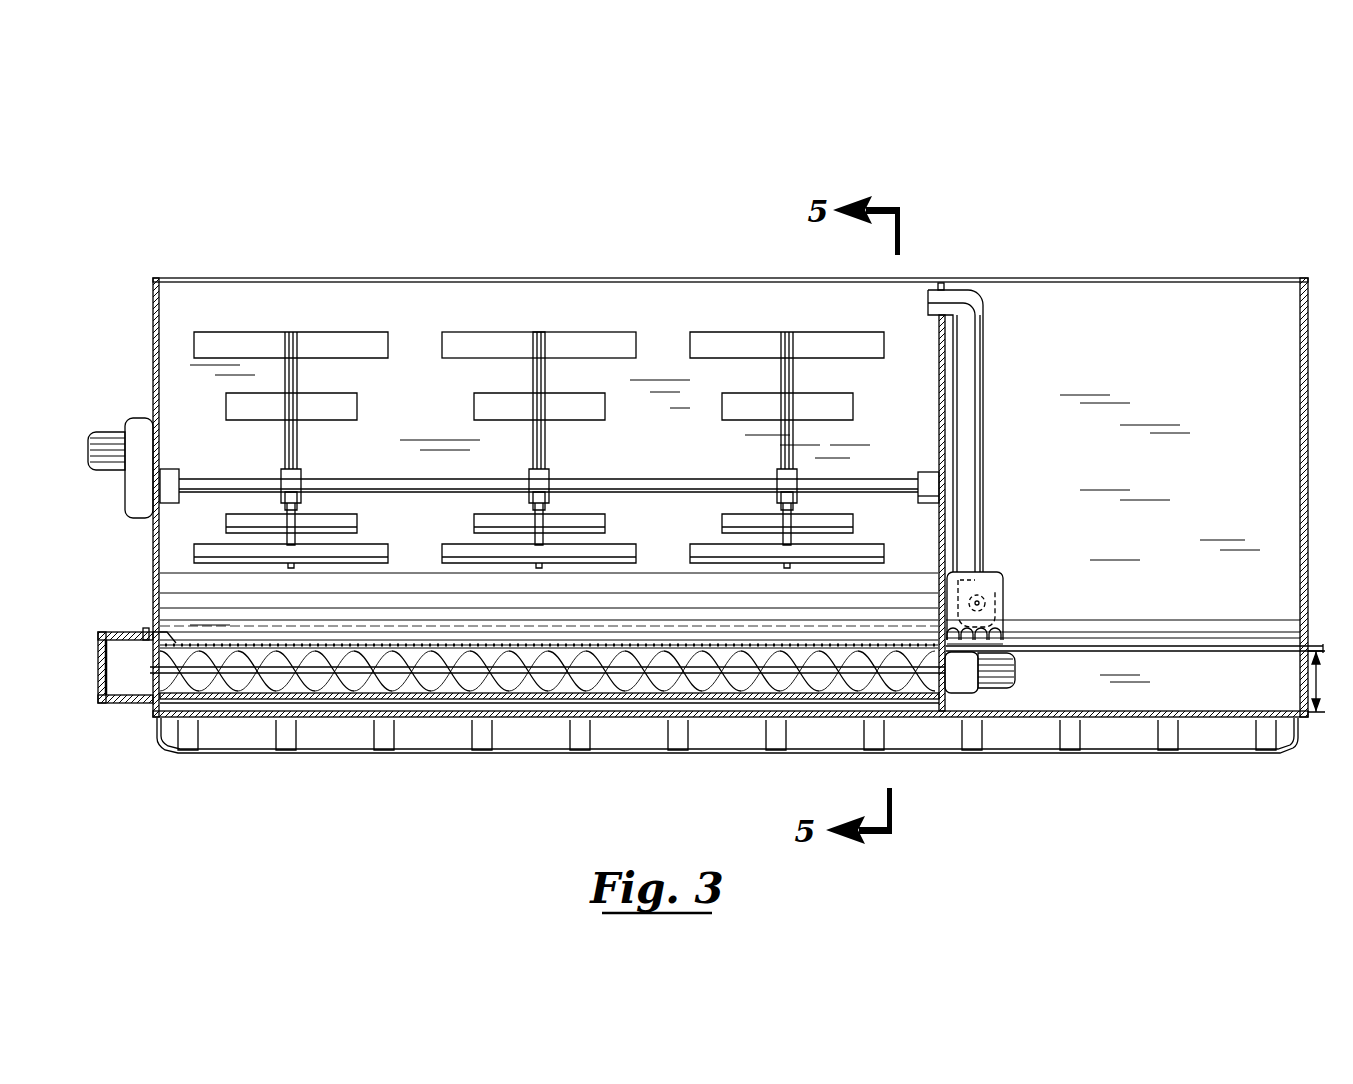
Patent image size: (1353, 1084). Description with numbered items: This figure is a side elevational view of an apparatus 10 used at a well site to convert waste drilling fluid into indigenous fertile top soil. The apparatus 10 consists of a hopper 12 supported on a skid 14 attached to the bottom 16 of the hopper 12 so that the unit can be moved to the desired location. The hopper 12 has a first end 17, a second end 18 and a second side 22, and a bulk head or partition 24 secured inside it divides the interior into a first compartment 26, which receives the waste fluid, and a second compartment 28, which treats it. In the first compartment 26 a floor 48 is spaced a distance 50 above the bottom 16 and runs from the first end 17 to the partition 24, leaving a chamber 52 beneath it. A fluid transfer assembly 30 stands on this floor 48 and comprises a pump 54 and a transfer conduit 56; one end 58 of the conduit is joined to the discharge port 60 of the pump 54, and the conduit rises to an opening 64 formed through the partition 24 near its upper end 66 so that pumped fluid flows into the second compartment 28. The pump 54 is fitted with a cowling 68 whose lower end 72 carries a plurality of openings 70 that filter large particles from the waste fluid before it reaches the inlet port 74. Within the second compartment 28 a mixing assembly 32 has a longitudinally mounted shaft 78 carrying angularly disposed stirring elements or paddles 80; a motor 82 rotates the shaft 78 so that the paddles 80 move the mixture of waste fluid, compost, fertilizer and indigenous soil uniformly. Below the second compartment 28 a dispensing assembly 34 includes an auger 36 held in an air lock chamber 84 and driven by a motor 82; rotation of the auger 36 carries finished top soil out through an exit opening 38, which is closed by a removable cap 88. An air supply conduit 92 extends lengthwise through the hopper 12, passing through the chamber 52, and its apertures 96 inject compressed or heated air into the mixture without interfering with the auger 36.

The apparatus 10 is at (952, 138).
The hopper 12 is at (710, 459).
The skid 14 is at (727, 771).
The bottom 16 is at (337, 722).
The first end 17 is at (1318, 290).
The second end 18 is at (153, 335).
The second side 22 is at (344, 312).
The bulk head or partition 24 is at (938, 367).
The first compartment 26 is at (1147, 293).
The second compartment 28 is at (560, 396).
The fluid transfer assembly 30 is at (947, 399).
The mixing assembly 32 is at (539, 345).
The dispensing assembly 34 is at (197, 685).
The auger 36 is at (536, 691).
The exit opening 38 is at (146, 628).
The floor 48 is at (1220, 646).
The distance 50 is at (1316, 680).
The chamber 52 is at (1252, 690).
The pump 54 is at (997, 592).
The transfer conduit 56 is at (986, 436).
The one end 58 is at (1016, 595).
The discharge port 60 is at (928, 305).
The opening 64 is at (940, 285).
The upper end 66 is at (983, 283).
The cowling 68 is at (1003, 618).
The openings 70 is at (993, 640).
The lower end 72 is at (1003, 632).
The inlet port 74 is at (1003, 606).
The shaft 78 is at (341, 478).
The stirring elements or paddles 80 is at (723, 405).
The motor 82 is at (134, 415).
The air lock chamber 84 is at (540, 702).
The cap 88 is at (108, 707).
The air supply conduit 92 is at (575, 647).
The apertures 96 is at (372, 640).